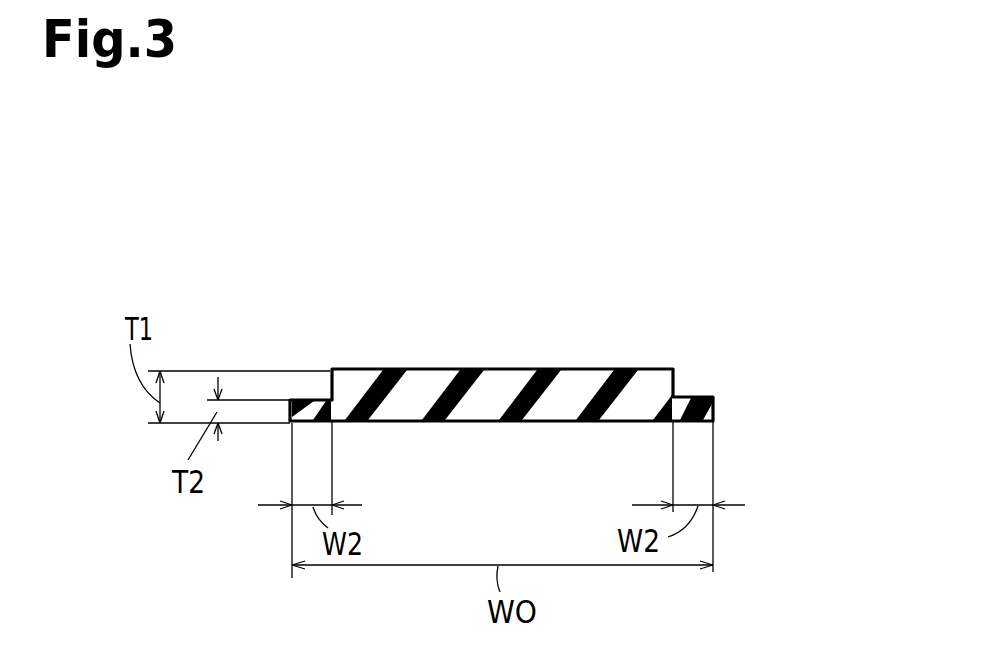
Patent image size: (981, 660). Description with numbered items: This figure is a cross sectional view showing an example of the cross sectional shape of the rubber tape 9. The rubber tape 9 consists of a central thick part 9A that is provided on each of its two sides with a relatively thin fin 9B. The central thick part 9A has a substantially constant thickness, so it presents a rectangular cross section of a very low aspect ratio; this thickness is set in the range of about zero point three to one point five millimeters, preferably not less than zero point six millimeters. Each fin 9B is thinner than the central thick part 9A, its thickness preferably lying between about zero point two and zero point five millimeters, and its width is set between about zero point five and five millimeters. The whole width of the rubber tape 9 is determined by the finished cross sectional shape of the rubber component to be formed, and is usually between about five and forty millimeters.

The rubber tape 9 is at (528, 302).
The central thick part 9A is at (503, 368).
The fin 9B is at (313, 413).